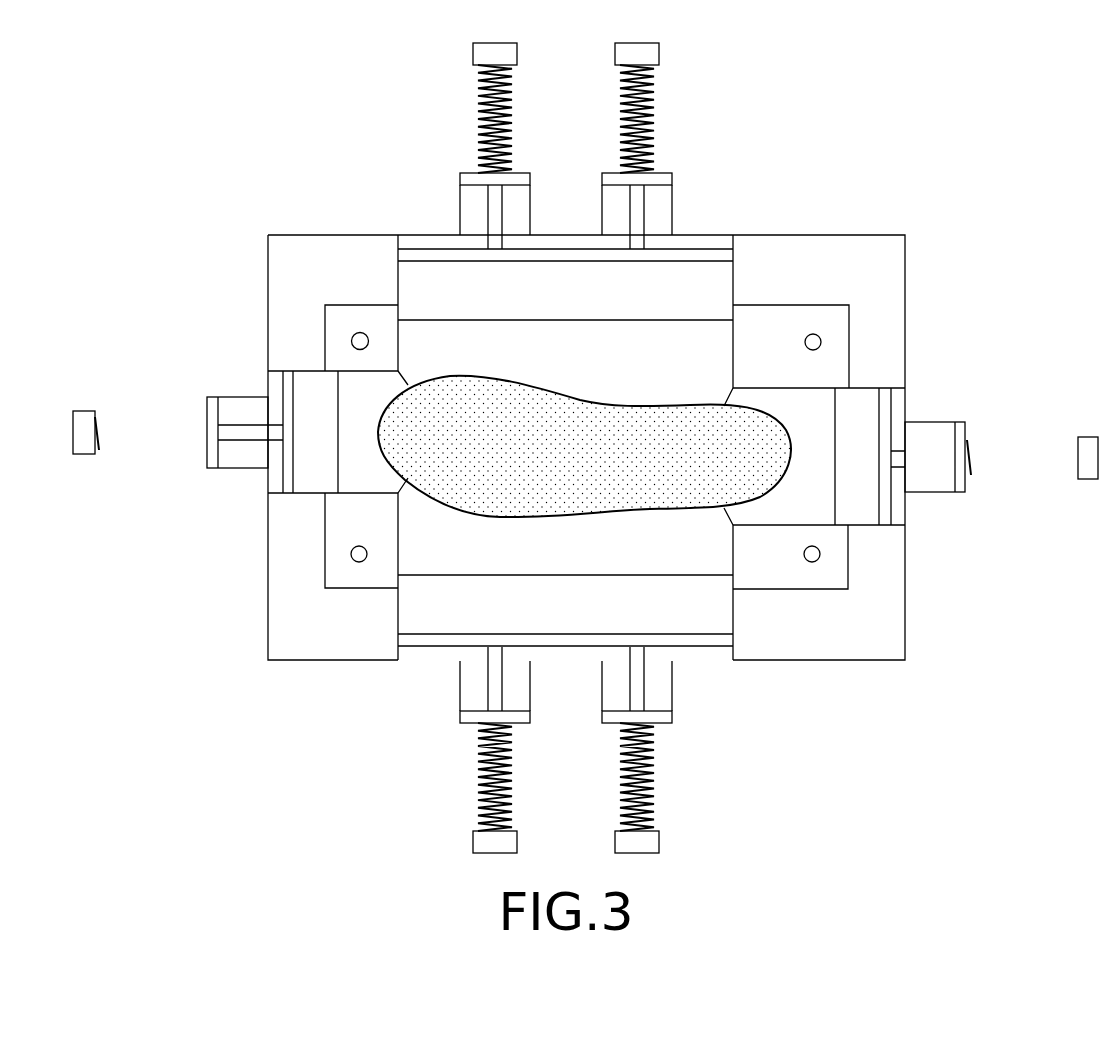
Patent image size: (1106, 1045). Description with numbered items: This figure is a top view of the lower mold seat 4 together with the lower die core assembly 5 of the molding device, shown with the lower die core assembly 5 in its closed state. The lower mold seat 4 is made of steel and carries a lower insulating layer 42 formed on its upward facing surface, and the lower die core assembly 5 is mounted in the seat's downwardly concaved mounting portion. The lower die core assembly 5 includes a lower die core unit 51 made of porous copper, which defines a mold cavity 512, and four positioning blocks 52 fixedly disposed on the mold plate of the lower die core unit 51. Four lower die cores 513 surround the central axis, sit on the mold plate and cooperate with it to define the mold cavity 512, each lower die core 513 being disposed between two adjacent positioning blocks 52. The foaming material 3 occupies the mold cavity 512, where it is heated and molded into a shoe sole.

The foaming material 3 is at (443, 382).
The lower mold seat 4 is at (907, 594).
The lower insulating layer 42 is at (317, 627).
The lower die core assembly 5 is at (432, 248).
The lower die core unit 51 is at (715, 250).
The mold cavity 512 is at (467, 512).
The lower die cores 513 is at (663, 345).
The positioning blocks 52 is at (324, 340).